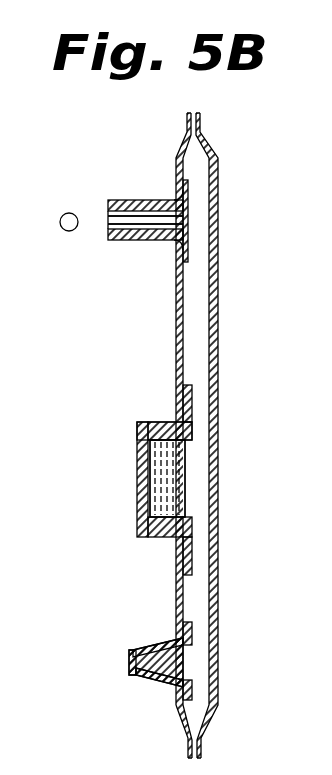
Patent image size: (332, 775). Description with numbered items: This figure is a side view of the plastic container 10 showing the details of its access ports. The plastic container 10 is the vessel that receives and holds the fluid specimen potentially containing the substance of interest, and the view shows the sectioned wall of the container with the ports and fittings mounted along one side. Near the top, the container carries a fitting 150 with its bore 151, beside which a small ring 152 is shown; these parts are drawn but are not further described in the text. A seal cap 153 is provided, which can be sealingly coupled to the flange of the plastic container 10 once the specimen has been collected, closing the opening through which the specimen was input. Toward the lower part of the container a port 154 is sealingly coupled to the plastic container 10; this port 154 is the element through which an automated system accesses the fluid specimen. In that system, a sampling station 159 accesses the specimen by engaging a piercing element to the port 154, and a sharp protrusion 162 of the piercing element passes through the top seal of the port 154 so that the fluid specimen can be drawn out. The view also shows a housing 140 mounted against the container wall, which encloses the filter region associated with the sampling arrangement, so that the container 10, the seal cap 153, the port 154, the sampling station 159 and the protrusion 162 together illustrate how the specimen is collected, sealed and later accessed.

The plastic container 10 is at (218, 334).
The filter cup 140 is at (175, 537).
The inlet fitting 150 is at (138, 242).
The fitting bore 151 is at (148, 215).
The sealing ring 152 is at (66, 213).
The seal cap 153 is at (137, 440).
The port 154 is at (130, 665).
The sampling station 159 is at (140, 489).
The sharp protrusion 162 is at (190, 470).